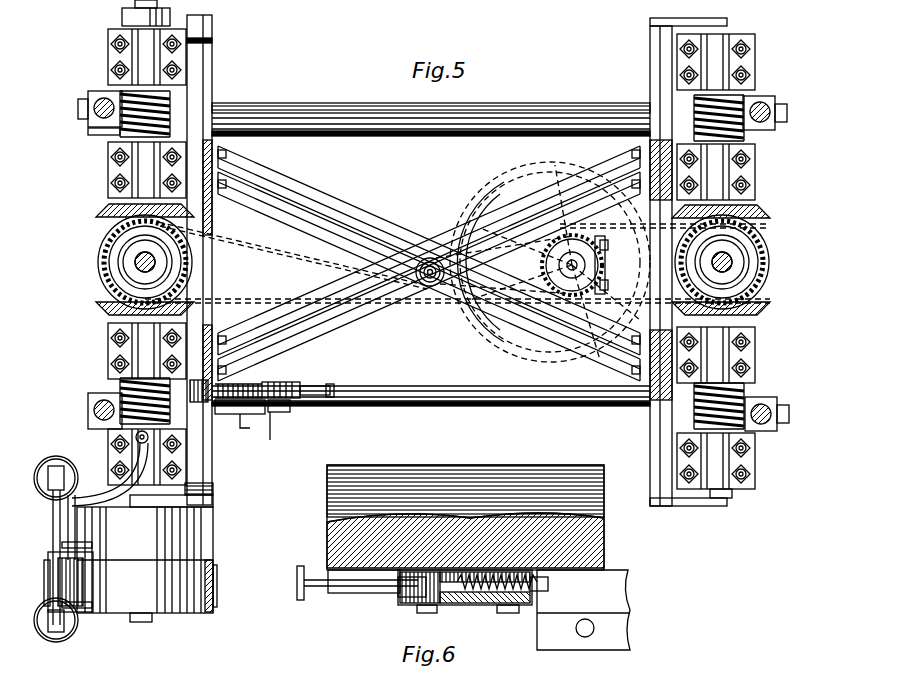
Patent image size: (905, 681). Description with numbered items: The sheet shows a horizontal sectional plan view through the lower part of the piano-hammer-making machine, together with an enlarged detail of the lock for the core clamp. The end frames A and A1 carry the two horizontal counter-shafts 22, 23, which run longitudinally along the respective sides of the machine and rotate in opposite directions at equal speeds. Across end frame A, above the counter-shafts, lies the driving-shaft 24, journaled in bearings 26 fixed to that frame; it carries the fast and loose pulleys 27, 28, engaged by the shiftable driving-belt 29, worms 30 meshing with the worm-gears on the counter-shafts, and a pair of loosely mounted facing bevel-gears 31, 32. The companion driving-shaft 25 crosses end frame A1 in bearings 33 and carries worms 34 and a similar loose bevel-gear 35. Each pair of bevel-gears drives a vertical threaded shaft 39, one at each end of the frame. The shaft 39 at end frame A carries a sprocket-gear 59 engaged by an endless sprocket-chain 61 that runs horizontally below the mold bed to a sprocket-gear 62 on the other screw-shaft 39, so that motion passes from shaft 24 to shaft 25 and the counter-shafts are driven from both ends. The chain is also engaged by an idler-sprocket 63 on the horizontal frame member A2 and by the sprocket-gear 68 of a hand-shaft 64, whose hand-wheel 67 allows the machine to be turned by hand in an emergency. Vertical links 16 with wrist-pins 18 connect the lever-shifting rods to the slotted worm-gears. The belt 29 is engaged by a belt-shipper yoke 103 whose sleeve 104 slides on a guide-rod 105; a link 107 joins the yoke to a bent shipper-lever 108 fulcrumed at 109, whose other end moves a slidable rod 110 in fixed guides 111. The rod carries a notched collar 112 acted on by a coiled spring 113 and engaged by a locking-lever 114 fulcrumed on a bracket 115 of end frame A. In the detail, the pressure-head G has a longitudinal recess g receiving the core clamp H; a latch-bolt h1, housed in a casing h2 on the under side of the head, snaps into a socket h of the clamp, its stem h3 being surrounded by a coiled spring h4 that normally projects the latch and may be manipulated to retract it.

In FIG. 5, the vertical link 16 is at (100, 103).
In FIG. 5, the wrist-pin 18 is at (78, 108).
In FIG. 5, the counter-shaft 22 is at (416, 118).
In FIG. 5, the counter-shaft 23 is at (416, 408).
In FIG. 5, the driving-shaft 24 is at (142, 623).
In FIG. 5, the driving-shaft 25 is at (732, 496).
In FIG. 5, the bearing 26 is at (113, 48).
In FIG. 5, the fast pulley 27 is at (207, 530).
In FIG. 5, the loose pulley 28 is at (196, 616).
In FIG. 5, the driving-belt 29 is at (62, 584).
In FIG. 5, the worm 30 is at (120, 133).
In FIG. 5, the bevel-gear 31 is at (98, 212).
In FIG. 5, the bevel-gear 32 is at (97, 306).
In FIG. 5, the bearing 33 is at (748, 60).
In FIG. 5, the worm 34 is at (745, 134).
In FIG. 5, the bevel-gear 35 is at (770, 215).
In FIG. 5, the vertical threaded shaft 39 is at (138, 258).
In FIG. 5, the sprocket-gear 59 is at (110, 262).
In FIG. 5, the sprocket-chain 61 is at (457, 262).
In FIG. 5, the sprocket-gear 62 is at (757, 262).
In FIG. 5, the idler-sprocket 63 is at (436, 258).
In FIG. 5, the hand-shaft 64 is at (556, 268).
In FIG. 5, the hand-wheel 67 is at (520, 338).
In FIG. 5, the sprocket-gear 68 is at (504, 264).
In FIG. 5, the belt-shipper yoke 103 is at (90, 612).
In FIG. 5, the sleeve 104 is at (55, 560).
In FIG. 5, the guide-rod 105 is at (52, 500).
In FIG. 5, the link 107 is at (78, 530).
In FIG. 5, the shipper-lever 108 is at (118, 496).
In FIG. 5, the fulcrum 109 is at (136, 436).
In FIG. 5, the slidable rod 110 is at (308, 390).
In FIG. 5, the fixed guide 111 is at (198, 380).
In FIG. 5, the notched collar 112 is at (278, 412).
In FIG. 5, the coiled spring 113 is at (260, 382).
In FIG. 5, the locking-lever 114 is at (300, 382).
In FIG. 5, the fixed bracket 115 is at (246, 428).
In FIG. 5, the end frame A is at (213, 475).
In FIG. 5, the end frame A1 is at (632, 372).
In FIG. 5, the horizontal frame member A2 is at (348, 318).
In FIG. 6, the pressure-head G is at (600, 536).
In FIG. 6, the longitudinal recess g is at (340, 572).
In FIG. 6, the clamp H is at (622, 590).
In FIG. 6, the socket h is at (566, 590).
In FIG. 6, the latch-bolt h1 is at (527, 608).
In FIG. 6, the casing h2 is at (490, 607).
In FIG. 6, the stem h3 is at (396, 592).
In FIG. 6, the coiled spring h4 is at (480, 576).